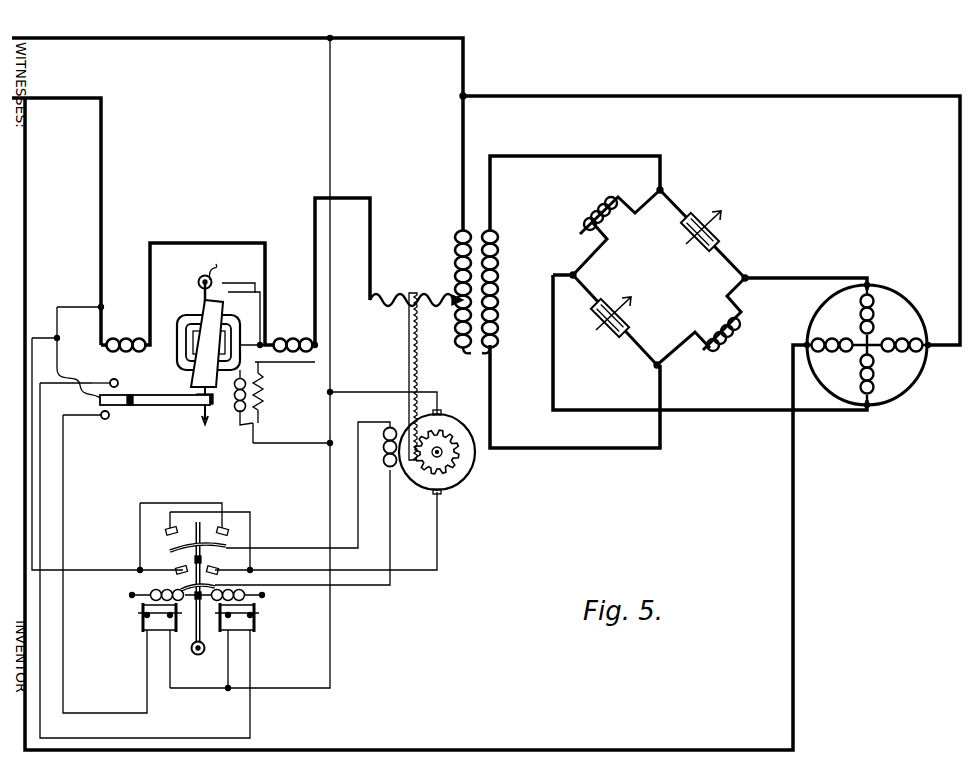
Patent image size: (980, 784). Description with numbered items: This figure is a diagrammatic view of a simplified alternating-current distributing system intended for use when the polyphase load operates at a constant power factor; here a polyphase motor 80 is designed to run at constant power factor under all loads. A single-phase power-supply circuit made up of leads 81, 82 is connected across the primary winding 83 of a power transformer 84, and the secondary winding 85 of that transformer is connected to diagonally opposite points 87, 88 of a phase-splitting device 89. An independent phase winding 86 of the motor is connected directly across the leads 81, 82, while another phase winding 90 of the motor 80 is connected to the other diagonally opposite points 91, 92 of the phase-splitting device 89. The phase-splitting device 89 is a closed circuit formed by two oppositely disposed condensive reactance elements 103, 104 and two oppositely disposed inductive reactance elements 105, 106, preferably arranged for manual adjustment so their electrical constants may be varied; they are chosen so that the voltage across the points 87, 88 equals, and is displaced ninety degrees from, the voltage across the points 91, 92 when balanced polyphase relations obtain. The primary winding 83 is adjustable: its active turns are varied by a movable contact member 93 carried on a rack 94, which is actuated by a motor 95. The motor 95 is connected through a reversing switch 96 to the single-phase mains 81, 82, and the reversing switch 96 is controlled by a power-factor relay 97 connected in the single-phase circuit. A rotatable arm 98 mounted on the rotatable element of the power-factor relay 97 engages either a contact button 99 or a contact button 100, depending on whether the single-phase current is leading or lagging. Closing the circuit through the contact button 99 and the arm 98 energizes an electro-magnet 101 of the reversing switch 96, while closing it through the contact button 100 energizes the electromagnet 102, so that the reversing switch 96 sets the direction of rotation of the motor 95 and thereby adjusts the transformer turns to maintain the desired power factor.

The polyphase motor 80 is at (873, 355).
The lead 81 is at (155, 30).
The lead 82 is at (66, 98).
The primary winding 83 is at (455, 244).
The power transformer 84 is at (470, 350).
The secondary winding 85 is at (498, 248).
The independent phase winding 86 is at (836, 338).
The diagonally opposite point 87 is at (665, 188).
The diagonally opposite point 88 is at (654, 368).
The phase-splitting device 89 is at (656, 279).
The phase winding 90 is at (876, 320).
The diagonally opposite point 91 is at (577, 275).
The diagonally opposite point 92 is at (748, 275).
The movable contact member 93 is at (428, 298).
The rack 94 is at (409, 333).
The motor 95 is at (445, 445).
The reversing switch 96 is at (296, 530).
The power-factor relay 97 is at (186, 291).
The rotatable arm 98 is at (172, 405).
The contact button 99 is at (119, 380).
The contact button 100 is at (108, 419).
The electro-magnet 101 is at (240, 613).
The electromagnet 102 is at (145, 613).
The condensive reactance element 103 is at (610, 330).
The condensive reactance element 104 is at (712, 236).
The inductive reactance element 105 is at (583, 243).
The inductive reactance element 106 is at (738, 340).